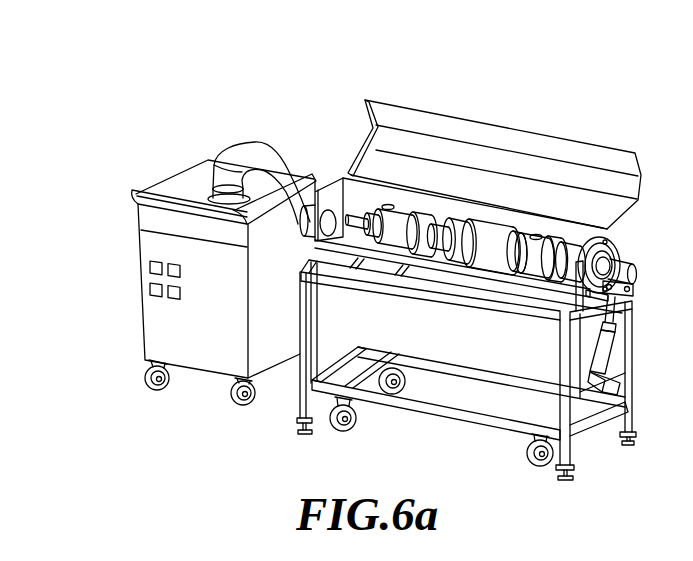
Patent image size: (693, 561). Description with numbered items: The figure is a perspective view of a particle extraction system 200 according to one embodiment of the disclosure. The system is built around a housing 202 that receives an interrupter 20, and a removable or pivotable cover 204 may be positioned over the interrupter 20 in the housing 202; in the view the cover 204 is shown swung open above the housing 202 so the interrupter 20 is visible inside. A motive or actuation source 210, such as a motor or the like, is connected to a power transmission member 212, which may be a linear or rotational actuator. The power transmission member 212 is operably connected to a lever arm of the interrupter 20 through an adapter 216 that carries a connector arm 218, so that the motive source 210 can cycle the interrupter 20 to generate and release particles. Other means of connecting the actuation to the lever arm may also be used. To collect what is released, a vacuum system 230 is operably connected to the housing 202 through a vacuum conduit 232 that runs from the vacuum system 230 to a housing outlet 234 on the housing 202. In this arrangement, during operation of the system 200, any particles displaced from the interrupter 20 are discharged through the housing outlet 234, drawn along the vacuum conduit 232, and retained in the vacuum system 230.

The particle extraction system 200 is at (541, 67).
The interrupter 20 is at (492, 226).
The housing 202 is at (613, 228).
The cover 204 is at (623, 146).
The motive or actuation source 210 is at (592, 392).
The power transmission member 212 is at (618, 324).
The adapter 216 is at (639, 266).
The connector arm 218 is at (628, 291).
The vacuum system 230 is at (134, 269).
The vacuum conduit 232 is at (227, 161).
The housing outlet 234 is at (332, 212).